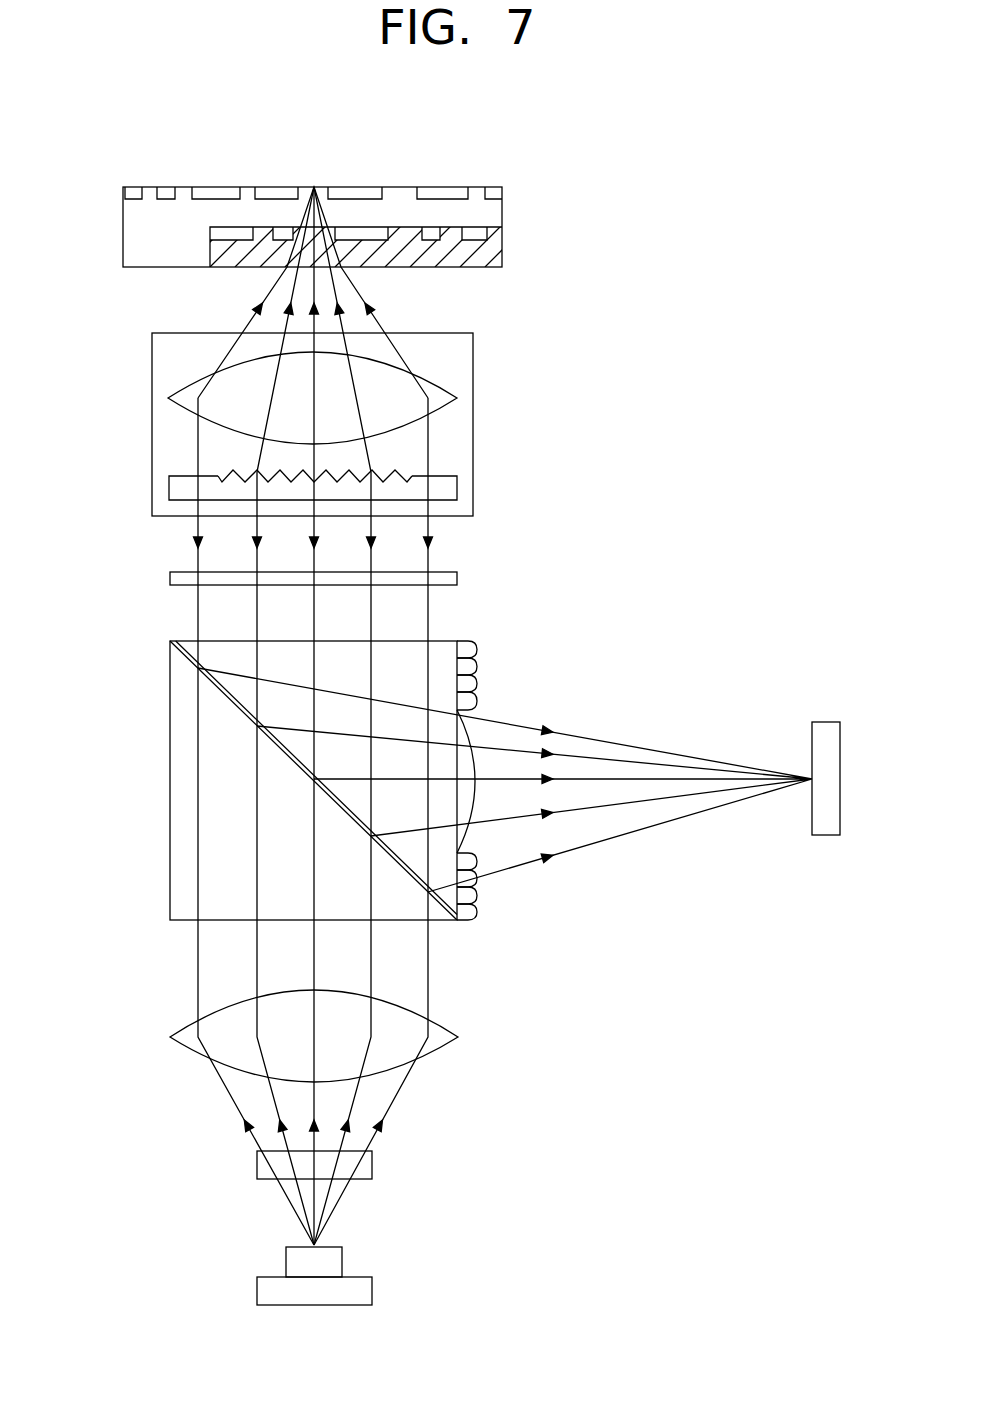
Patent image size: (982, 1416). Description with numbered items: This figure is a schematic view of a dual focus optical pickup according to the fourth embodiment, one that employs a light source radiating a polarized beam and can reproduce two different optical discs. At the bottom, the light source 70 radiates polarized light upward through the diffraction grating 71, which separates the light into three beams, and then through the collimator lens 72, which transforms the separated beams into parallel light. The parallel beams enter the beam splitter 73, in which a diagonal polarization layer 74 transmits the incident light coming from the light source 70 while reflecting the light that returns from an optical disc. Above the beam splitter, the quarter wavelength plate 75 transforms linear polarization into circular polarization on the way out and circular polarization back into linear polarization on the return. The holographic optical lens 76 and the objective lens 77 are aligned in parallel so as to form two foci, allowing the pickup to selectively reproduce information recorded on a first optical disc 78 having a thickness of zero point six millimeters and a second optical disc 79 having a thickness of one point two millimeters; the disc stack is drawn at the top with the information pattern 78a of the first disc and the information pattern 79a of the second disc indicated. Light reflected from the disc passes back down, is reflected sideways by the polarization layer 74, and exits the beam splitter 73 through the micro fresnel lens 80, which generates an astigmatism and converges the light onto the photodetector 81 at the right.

The light source 70 is at (257, 1290).
The diffraction grating 71 is at (257, 1165).
The collimator lens 72 is at (170, 1037).
The beam splitter 73 is at (170, 808).
The polarization layer 74 is at (197, 666).
The λ/4 wavelength plate 75 is at (170, 578).
The holographic optical lens 76 is at (169, 488).
The objective lens 77 is at (168, 398).
The first optical disc 78 is at (497, 252).
The pits of recording layer 78a is at (492, 230).
The second optical disc 79 is at (138, 242).
The pits of substrate 79a is at (133, 189).
The micro fresnel lens 80 is at (473, 648).
The photodetector 81 is at (828, 722).